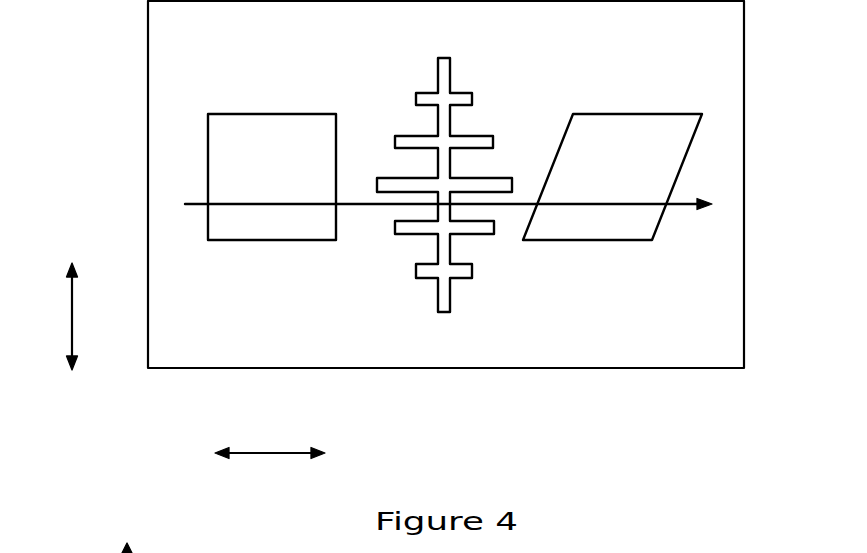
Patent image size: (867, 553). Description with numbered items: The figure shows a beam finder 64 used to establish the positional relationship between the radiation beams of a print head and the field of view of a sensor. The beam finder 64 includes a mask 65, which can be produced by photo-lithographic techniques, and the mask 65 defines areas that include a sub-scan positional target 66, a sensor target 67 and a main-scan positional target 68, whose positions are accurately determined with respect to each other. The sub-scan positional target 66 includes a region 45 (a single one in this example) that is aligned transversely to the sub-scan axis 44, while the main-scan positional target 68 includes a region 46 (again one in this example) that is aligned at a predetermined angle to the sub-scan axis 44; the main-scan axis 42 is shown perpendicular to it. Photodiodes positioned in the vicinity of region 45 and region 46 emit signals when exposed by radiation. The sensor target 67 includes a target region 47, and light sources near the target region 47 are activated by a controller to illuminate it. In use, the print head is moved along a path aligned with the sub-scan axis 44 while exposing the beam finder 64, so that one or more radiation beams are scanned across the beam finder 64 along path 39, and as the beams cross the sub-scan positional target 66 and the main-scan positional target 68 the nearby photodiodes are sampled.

The beam finder 64 is at (122, 79).
The mask 65 is at (162, 167).
The path 39 is at (673, 205).
The region 45 is at (250, 223).
The target region 47 is at (407, 229).
The region 46 is at (578, 222).
The sub-scan positional target 66 is at (270, 240).
The sensor target 67 is at (443, 312).
The main-scan positional target 68 is at (593, 240).
The main-scan axis 42 is at (74, 290).
The sub-scan axis 44 is at (243, 452).